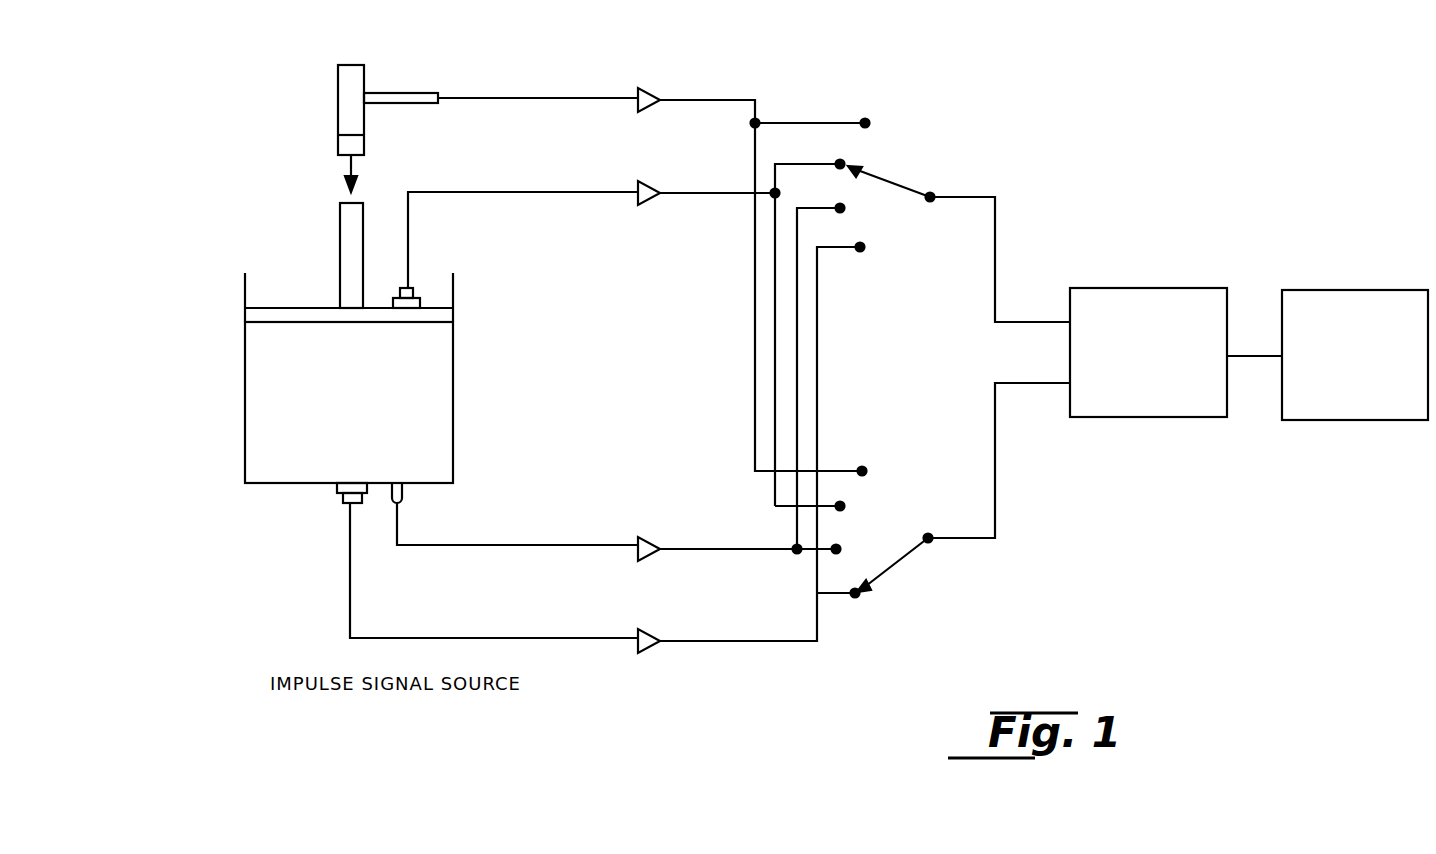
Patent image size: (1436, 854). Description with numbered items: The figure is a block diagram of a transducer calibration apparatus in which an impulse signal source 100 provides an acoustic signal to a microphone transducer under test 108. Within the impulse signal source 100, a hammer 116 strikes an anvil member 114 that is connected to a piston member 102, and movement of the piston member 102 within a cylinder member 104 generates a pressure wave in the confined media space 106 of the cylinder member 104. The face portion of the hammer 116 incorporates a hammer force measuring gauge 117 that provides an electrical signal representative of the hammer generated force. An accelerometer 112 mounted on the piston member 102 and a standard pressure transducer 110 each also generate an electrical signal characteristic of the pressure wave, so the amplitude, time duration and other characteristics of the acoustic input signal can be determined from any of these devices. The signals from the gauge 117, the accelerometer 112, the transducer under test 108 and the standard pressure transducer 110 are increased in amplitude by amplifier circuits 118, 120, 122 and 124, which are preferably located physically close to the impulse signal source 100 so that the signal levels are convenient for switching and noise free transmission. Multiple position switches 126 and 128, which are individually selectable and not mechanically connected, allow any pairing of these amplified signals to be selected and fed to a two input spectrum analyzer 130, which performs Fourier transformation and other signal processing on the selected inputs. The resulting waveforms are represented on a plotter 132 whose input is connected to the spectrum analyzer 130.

The impulse signal source 100 is at (236, 506).
The piston member 102 is at (341, 358).
The cylinder member 104 is at (453, 425).
The confined media space 106 is at (282, 393).
The transducer under test 108 is at (343, 505).
The standard pressure transducer 110 is at (392, 505).
The accelerometer 112 is at (420, 300).
The anvil member 114 is at (363, 278).
The hammer 116 is at (364, 78).
The hammer force measuring gauge 117 is at (364, 153).
The amplifier circuit 118 is at (646, 90).
The amplifier circuit 120 is at (647, 182).
The amplifier circuit 122 is at (648, 630).
The amplifier circuit 124 is at (647, 538).
The multiple position switch 126 is at (922, 170).
The multiple position switch 128 is at (927, 503).
The two input spectrum analyzer 130 is at (1125, 288).
The plotter 132 is at (1315, 290).